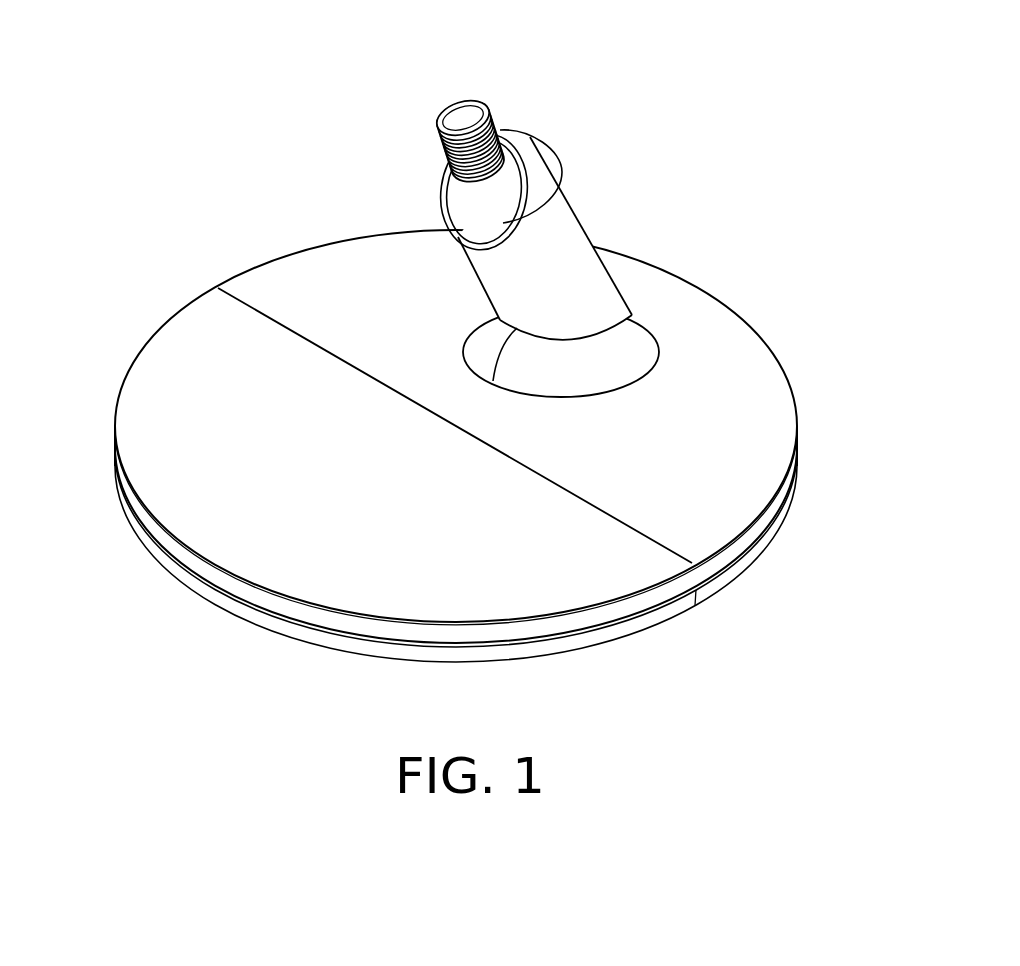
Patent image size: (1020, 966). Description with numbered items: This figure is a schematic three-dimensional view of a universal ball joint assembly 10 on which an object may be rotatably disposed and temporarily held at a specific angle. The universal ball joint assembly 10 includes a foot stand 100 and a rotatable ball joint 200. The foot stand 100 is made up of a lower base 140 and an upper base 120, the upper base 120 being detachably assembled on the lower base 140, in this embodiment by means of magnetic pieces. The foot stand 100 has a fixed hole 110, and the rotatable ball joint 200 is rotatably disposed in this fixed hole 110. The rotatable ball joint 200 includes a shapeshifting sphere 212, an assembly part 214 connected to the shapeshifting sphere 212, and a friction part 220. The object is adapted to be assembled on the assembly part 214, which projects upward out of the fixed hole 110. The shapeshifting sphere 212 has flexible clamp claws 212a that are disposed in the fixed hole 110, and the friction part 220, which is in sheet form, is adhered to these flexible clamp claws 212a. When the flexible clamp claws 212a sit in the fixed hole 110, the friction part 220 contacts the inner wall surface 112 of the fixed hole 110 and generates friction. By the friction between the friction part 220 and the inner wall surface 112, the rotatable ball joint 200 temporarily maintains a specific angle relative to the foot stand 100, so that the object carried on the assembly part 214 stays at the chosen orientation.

The universal ball joint assembly 10 is at (136, 282).
The foot stand 100 is at (872, 353).
The fixed hole 110 is at (464, 218).
The inner wall surface 112 is at (443, 178).
The upper base 120 is at (743, 397).
The lower base 140 is at (750, 562).
The rotatable ball joint 200 is at (718, 38).
The shapeshifting sphere 212 is at (580, 177).
The flexible clamp claws 212a is at (473, 195).
The assembly part 214 is at (494, 121).
The friction part 220 is at (485, 213).